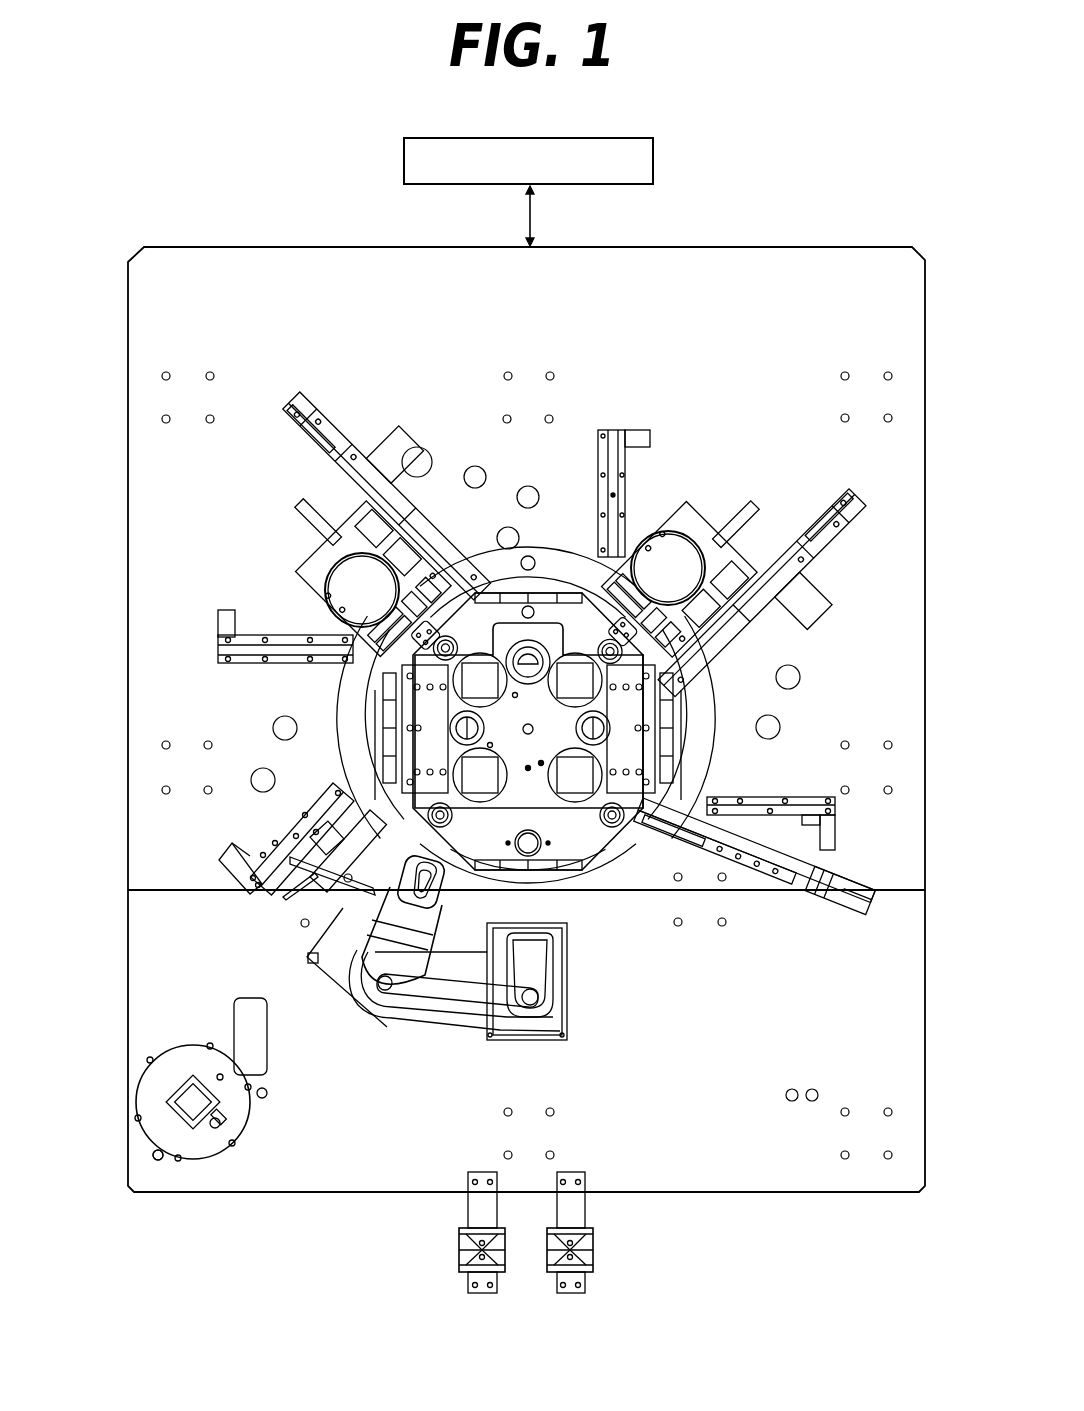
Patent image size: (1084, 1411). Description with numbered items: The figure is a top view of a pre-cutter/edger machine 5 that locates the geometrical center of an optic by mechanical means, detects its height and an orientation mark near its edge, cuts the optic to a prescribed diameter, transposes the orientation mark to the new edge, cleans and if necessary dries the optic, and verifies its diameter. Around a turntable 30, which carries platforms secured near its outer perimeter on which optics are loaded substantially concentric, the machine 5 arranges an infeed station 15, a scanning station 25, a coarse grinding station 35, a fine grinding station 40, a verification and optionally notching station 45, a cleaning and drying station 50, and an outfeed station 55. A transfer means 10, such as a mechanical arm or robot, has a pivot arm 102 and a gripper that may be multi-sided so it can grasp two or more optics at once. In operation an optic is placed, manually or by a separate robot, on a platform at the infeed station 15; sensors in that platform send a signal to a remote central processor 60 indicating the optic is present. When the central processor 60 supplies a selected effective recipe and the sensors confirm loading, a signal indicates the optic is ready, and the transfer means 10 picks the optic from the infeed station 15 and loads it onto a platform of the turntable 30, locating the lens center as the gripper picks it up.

The pre-cutter/edger machine 5 is at (838, 247).
The transfer means 10 is at (390, 951).
The infeed station 15 is at (577, 1243).
The scanning station 25 is at (660, 837).
The turntable 30 is at (535, 727).
The coarse grinding station 35 is at (672, 566).
The fine grinding station 40 is at (362, 590).
The verification and notching station 45 is at (398, 831).
The cleaning and drying station 50 is at (190, 1097).
The outfeed station 55 is at (472, 1252).
The central processor 60 is at (653, 160).
The pivot arm 102 is at (402, 1022).